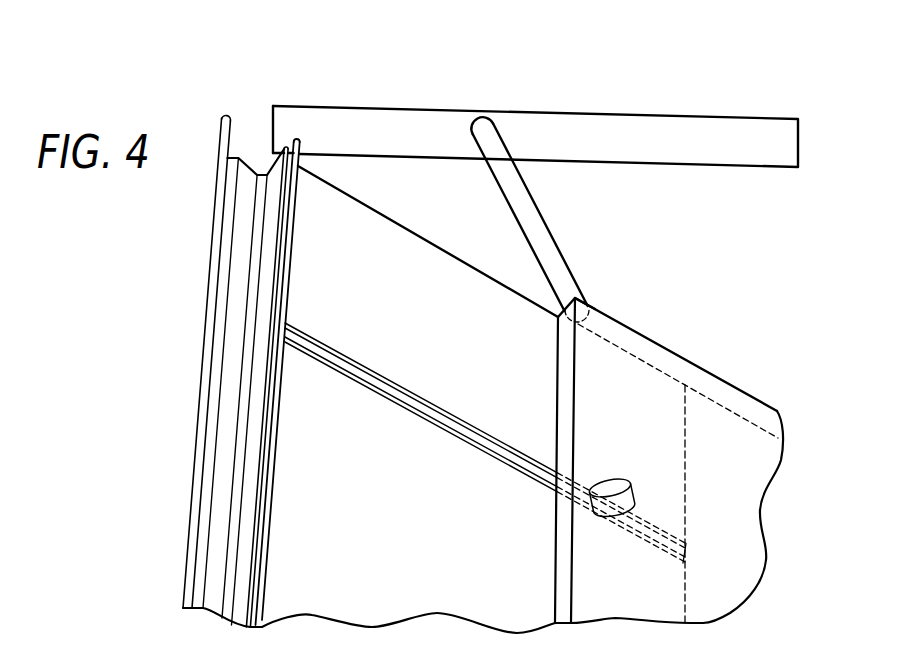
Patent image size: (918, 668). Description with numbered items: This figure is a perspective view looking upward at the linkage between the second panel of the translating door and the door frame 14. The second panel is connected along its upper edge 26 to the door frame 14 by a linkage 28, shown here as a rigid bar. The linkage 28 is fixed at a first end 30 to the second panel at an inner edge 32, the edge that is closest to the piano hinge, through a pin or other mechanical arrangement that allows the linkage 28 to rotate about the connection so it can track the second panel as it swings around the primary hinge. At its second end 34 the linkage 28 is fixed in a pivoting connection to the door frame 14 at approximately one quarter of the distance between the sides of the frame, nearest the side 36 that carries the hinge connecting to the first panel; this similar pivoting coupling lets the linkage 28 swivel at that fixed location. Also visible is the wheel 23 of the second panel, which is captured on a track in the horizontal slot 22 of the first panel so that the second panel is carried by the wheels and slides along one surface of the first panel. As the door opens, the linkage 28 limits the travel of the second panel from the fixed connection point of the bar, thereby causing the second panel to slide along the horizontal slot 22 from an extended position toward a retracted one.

The door frame 14 is at (677, 135).
The horizontal slot 22 is at (325, 348).
The wheel 23 is at (623, 488).
The upper edge 26 is at (652, 337).
The linkage 28 is at (552, 184).
The first end 30 is at (590, 302).
The inner edge 32 is at (562, 357).
The second end 34 is at (485, 132).
The side 36 is at (272, 119).